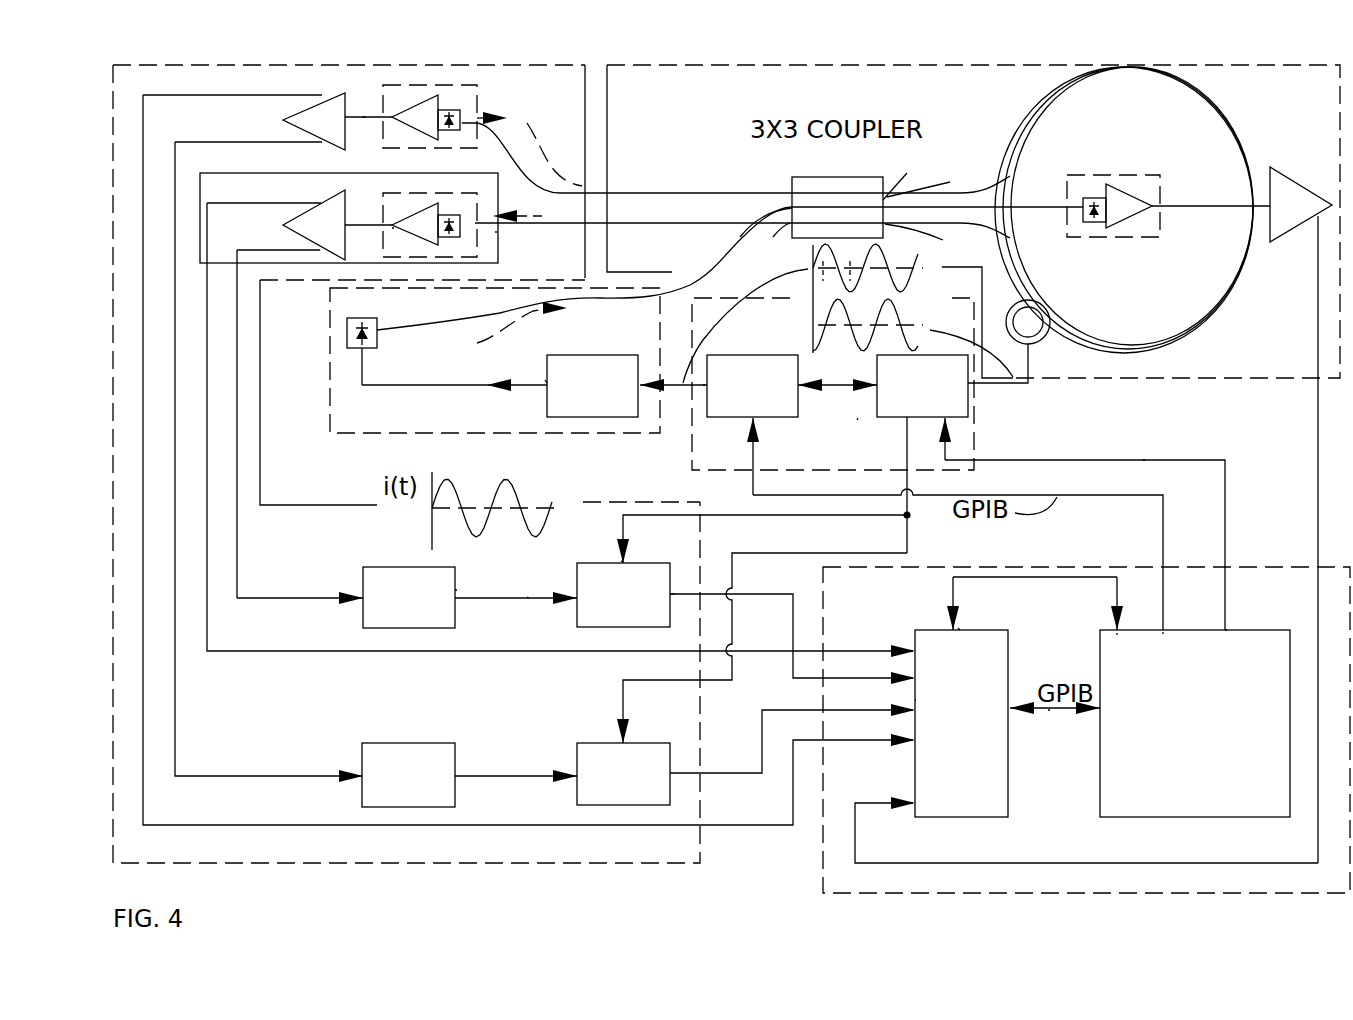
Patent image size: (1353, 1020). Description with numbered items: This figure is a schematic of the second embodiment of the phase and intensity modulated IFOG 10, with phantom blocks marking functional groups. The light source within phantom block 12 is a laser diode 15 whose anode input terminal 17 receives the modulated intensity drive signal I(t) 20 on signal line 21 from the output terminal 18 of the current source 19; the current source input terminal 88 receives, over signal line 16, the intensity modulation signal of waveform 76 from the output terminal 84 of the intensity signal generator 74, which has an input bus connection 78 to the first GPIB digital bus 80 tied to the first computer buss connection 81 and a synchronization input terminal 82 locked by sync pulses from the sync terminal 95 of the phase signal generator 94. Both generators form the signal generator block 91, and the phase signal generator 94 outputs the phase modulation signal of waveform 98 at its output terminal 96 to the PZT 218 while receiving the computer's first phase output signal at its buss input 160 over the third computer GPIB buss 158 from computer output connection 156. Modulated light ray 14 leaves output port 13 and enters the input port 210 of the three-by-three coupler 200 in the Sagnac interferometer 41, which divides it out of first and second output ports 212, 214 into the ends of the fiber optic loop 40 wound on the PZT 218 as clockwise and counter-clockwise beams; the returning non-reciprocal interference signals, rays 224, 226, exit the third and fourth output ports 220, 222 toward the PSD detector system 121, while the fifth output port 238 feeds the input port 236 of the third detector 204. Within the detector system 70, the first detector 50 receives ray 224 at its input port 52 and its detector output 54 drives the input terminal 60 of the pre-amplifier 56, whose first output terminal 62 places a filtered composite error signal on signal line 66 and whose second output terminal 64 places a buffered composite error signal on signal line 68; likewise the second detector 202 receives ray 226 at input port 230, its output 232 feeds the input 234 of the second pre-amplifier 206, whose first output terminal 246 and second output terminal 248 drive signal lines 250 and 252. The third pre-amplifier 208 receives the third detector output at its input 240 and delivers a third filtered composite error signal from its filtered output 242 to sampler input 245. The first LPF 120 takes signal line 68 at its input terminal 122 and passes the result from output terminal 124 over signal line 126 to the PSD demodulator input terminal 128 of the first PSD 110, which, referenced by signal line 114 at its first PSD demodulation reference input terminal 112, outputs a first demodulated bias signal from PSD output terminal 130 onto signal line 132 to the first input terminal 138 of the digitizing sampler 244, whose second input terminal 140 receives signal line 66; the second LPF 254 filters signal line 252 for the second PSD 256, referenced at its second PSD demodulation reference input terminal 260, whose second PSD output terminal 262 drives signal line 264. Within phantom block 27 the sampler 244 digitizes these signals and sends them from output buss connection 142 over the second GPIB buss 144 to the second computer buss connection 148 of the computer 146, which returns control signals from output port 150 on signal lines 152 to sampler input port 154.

The phase and intensity modulated IFOG 10 is at (858, 95).
The light source 12 is at (377, 423).
The output port 13 is at (692, 294).
The modulated light ray 14 is at (508, 332).
The laser diode 15 is at (357, 318).
The signal line 16 is at (680, 382).
The input terminal 17 is at (366, 349).
The output terminal 18 is at (545, 380).
The current source 19 is at (592, 386).
The modulated intensity drive signal 20 is at (453, 478).
The signal line 21 is at (400, 388).
The digitizing sampler and computer block 27 is at (1077, 847).
The fiber optic loop 40 is at (1153, 125).
The Sagnac interferometer 41 is at (663, 92).
The first detector 50 is at (400, 207).
The input port 52 is at (497, 232).
The detector output 54 is at (392, 228).
The pre-amplifier 56 is at (314, 225).
The input terminal 60 is at (350, 218).
The first output terminal 62 is at (322, 202).
The second output terminal 64 is at (300, 247).
The signal line 66 is at (230, 651).
The signal line 68 is at (238, 533).
The detector system 70 is at (500, 250).
The intensity signal generator 74 is at (752, 386).
The intensity modulation waveform 76 is at (880, 250).
The input bus connection 78 is at (748, 420).
The first GPIB digital bus 80 is at (773, 493).
The first computer buss connection 81 is at (1163, 632).
The synchronization input terminal 82 is at (802, 390).
The output terminal 84 is at (703, 385).
The current source input terminal 88 is at (640, 392).
The signal generator block 91 is at (583, 340).
The phase signal generator 94 is at (922, 386).
The sync terminal 95 is at (870, 390).
The output terminal 96 is at (972, 386).
The phase modulation waveform 98 is at (895, 318).
The first PSD 110 is at (623, 595).
The first PSD demodulation reference input terminal 112 is at (621, 561).
The signal line 114 is at (890, 523).
The first LPF 120 is at (409, 597).
The PSD detector system 121 is at (565, 92).
The input terminal 122 is at (358, 592).
The output terminal 124 is at (457, 590).
The signal line 126 is at (527, 597).
The PSD demodulator input terminal 128 is at (516, 585).
The PSD output terminal 130 is at (677, 590).
The signal line 132 is at (740, 593).
The first input terminal 138 is at (910, 677).
The second input terminal 140 is at (910, 645).
The output buss connection 142 is at (958, 728).
The second GPIB buss 144 is at (1048, 710).
The computer 146 is at (1208, 733).
The second computer buss connection 148 is at (1098, 710).
The output port 150 is at (1117, 633).
The signal lines 152 is at (968, 580).
The sampler input port 154 is at (960, 628).
The computer output connection 156 is at (1228, 630).
The third computer GPIB buss 158 is at (1143, 460).
The phase signal generator buss input 160 is at (950, 420).
The three-by-three coupler 200 is at (868, 173).
The second detector 202 is at (463, 93).
The third detector 204 is at (1120, 182).
The second pre-amplifier 206 is at (314, 121).
The third pre-amplifier 208 is at (1301, 204).
The input port 210 is at (778, 270).
The first output port 212 is at (915, 177).
The second output port 214 is at (938, 238).
The PZT 218 is at (1048, 337).
The third output port 220 is at (775, 247).
The fourth output port 222 is at (790, 186).
The first interference signal ray 224 is at (547, 217).
The second interference signal ray 226 is at (560, 167).
The input port 230 is at (520, 117).
The output 232 is at (365, 120).
The input 234 is at (348, 113).
The input port 236 is at (1070, 203).
The fifth output port 238 is at (940, 177).
The input 240 is at (1263, 207).
The filtered output 242 is at (1293, 227).
The digitizing sampler 244 is at (977, 715).
The sampler input 245 is at (1074, 819).
The first output terminal 246 is at (323, 90).
The second output terminal 248 is at (322, 144).
The signal line 250 is at (529, 461).
The signal line 252 is at (269, 462).
The second LPF 254 is at (469, 775).
The second PSD 256 is at (623, 774).
The second PSD demodulation reference input terminal 260 is at (622, 742).
The second PSD output terminal 262 is at (677, 772).
The signal line 264 is at (869, 695).